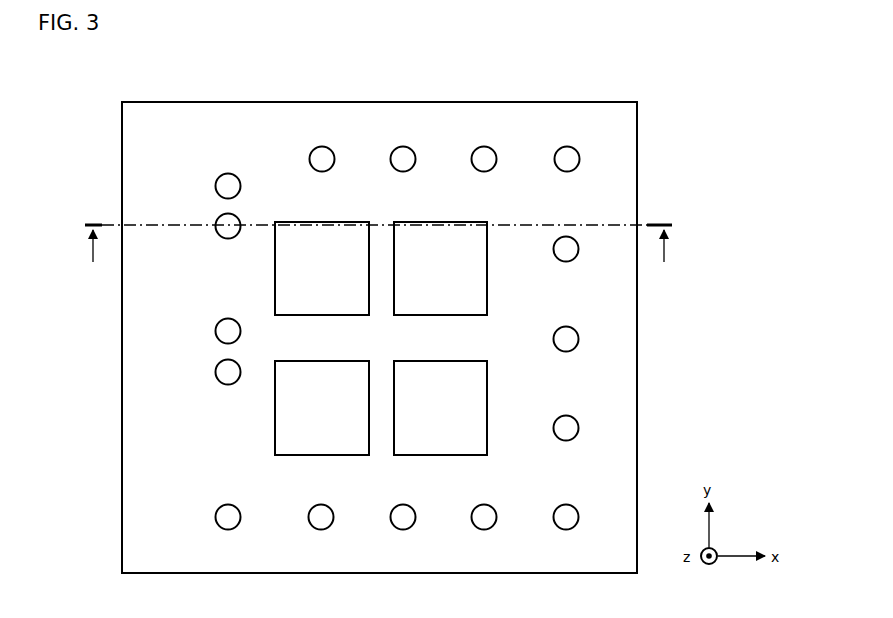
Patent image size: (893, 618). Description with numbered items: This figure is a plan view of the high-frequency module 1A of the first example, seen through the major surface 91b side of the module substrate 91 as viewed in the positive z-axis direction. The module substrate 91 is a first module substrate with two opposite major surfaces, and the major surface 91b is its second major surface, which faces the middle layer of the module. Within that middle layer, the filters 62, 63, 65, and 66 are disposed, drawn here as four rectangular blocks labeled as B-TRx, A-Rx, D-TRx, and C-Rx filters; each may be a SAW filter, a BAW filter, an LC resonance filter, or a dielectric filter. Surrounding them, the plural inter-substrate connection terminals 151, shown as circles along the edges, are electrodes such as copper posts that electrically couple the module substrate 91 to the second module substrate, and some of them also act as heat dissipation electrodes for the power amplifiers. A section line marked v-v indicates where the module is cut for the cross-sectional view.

The high-frequency module 1A is at (686, 75).
The module substrate 91 is at (459, 102).
The major surface 91b is at (594, 108).
The filter 62 is at (334, 222).
The filter 63 is at (430, 222).
The filter 65 is at (334, 361).
The filter 66 is at (430, 361).
The inter-substrate connection terminals 151 is at (401, 147).